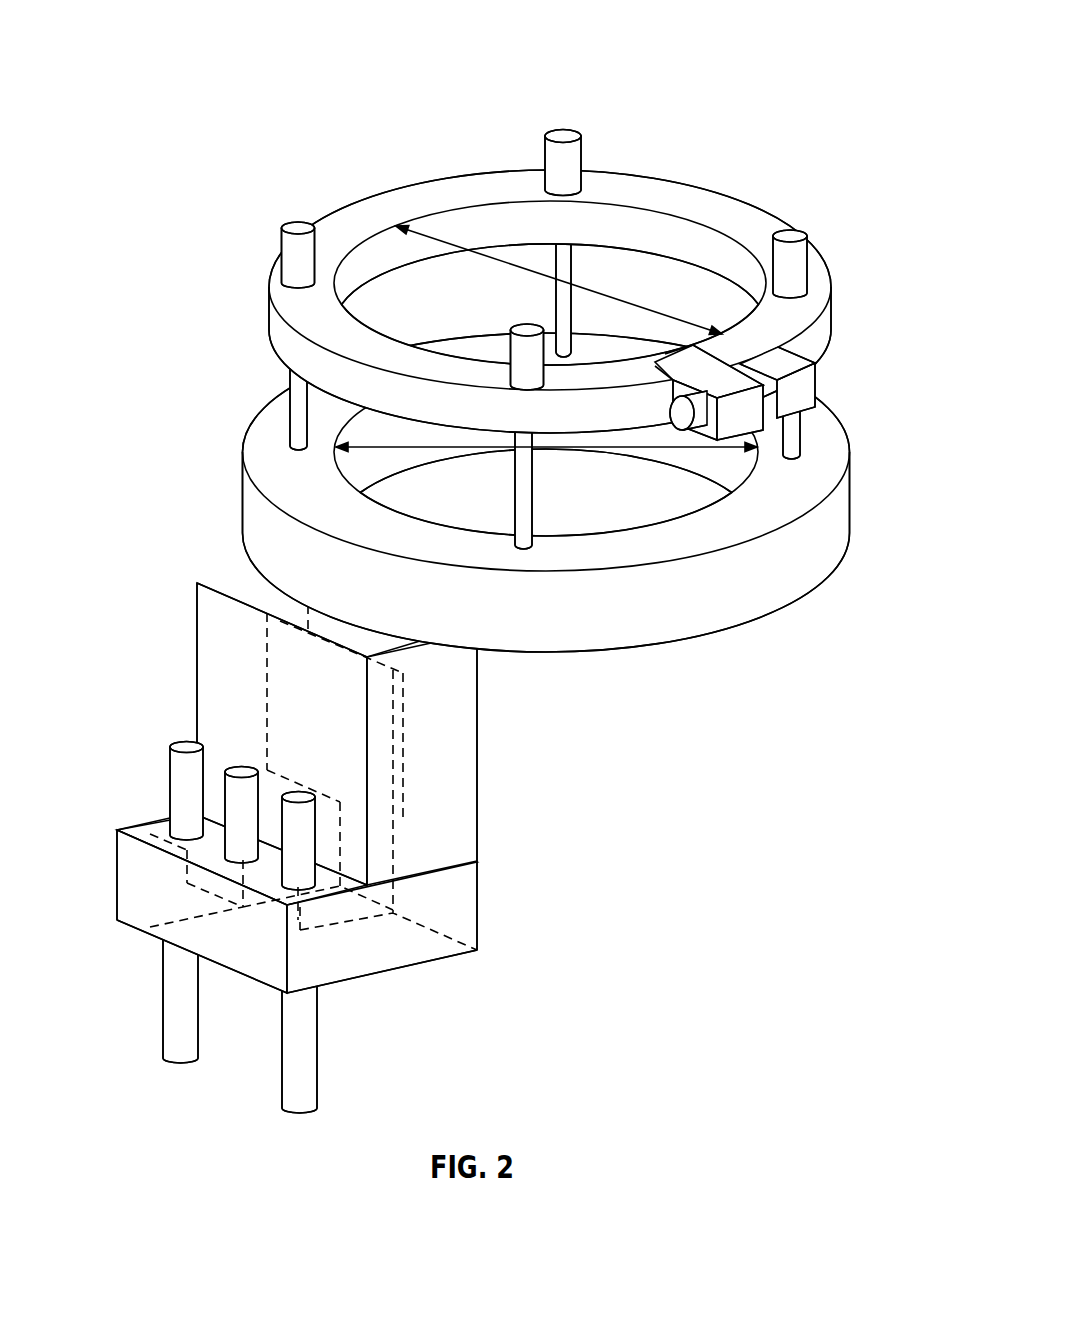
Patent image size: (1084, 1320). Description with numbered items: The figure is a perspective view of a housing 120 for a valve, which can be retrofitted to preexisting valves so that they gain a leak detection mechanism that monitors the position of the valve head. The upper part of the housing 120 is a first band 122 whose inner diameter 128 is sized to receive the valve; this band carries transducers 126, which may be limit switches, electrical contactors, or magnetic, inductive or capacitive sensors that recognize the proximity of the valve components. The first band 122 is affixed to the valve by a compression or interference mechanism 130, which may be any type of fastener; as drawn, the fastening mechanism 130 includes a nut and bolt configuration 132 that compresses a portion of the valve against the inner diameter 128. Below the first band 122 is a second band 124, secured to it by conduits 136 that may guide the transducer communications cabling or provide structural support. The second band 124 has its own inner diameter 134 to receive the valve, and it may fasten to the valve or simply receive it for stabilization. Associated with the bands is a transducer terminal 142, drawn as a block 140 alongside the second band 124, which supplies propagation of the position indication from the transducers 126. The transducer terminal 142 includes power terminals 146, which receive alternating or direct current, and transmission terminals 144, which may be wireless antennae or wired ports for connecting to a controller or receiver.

The housing 120 is at (500, 588).
The first band 122 is at (684, 184).
The second band 124 is at (642, 648).
The transducer 126 is at (563, 133).
The inner diameter 128 is at (513, 262).
The compression or interference mechanism 130 is at (777, 360).
The nut and bolt configuration 132 is at (680, 420).
The inner diameter 134 is at (463, 446).
The conduits 136 is at (798, 430).
The block 140 is at (491, 894).
The transducer terminal 142 is at (262, 688).
The transmission terminals 144 is at (186, 750).
The power terminals 146 is at (163, 1003).